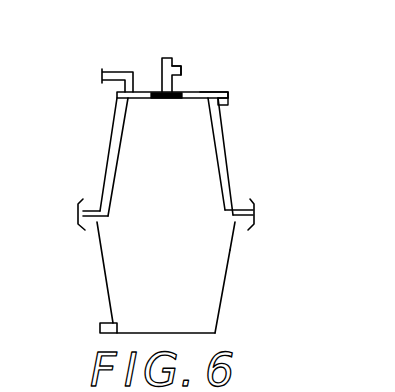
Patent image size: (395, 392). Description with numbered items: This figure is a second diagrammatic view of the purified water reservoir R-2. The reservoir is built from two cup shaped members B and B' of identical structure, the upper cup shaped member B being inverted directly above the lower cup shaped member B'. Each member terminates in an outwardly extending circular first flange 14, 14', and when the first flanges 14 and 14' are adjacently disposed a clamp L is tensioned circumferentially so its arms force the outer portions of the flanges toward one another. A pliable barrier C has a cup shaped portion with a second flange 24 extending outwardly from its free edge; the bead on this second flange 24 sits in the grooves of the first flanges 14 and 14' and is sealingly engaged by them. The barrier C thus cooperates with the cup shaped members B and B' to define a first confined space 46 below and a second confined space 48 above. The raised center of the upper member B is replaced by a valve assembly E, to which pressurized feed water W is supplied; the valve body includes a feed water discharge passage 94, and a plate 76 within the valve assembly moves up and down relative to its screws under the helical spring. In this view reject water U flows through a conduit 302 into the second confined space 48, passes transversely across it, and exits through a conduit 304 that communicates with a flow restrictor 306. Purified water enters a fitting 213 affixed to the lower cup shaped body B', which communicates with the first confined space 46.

The second confined space 48 is at (142, 92).
The plate 76 is at (180, 99).
The feed water discharge passage 94 is at (184, 68).
The valve assembly E is at (181, 62).
The feed water W is at (168, 50).
The conduit 302 is at (103, 81).
The reject water U is at (92, 73).
The flow restrictor 306 is at (237, 93).
The conduit 304 is at (222, 105).
The pliable barrier C is at (121, 161).
The cup shaped member B is at (238, 156).
The clamp L is at (76, 214).
The first flange 14 is at (247, 192).
The second flange 24 is at (253, 221).
The first flange 14' is at (257, 237).
The cup shaped member B' is at (242, 291).
The reservoir R-2 is at (235, 306).
The fitting 213 is at (110, 322).
The first confined space 46 is at (177, 256).